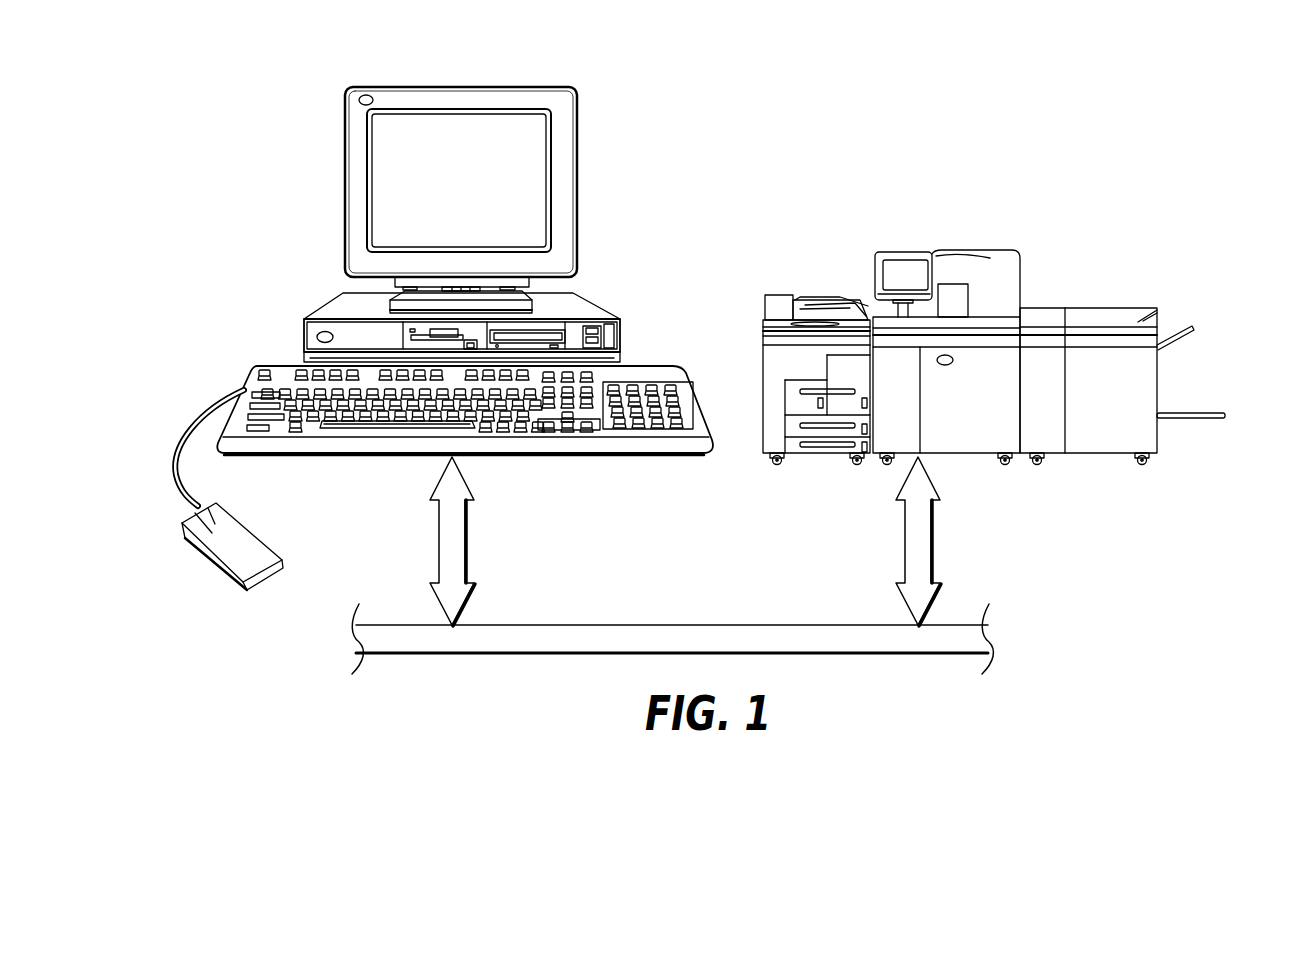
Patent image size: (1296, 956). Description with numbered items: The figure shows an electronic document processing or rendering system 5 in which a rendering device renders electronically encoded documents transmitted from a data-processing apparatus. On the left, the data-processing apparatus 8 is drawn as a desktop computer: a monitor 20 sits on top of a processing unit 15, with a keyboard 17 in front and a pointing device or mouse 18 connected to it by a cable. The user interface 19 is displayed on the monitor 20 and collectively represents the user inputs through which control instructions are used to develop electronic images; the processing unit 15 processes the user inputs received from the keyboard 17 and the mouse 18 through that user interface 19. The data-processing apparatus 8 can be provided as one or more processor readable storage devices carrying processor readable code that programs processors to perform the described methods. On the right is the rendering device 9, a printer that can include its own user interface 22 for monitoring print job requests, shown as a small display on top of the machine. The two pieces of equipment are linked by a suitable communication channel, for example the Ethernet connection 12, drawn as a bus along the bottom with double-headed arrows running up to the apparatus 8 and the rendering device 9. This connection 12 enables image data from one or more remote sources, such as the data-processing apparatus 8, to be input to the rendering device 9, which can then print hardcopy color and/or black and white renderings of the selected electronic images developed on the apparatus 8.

The electronic document processing or rendering system 5 is at (954, 126).
The data-processing apparatus 8 is at (603, 192).
The rendering device 9 is at (1041, 264).
The Ethernet connection 12 is at (678, 625).
The processing unit 15 is at (300, 332).
The keyboard 17 is at (690, 387).
The pointing device or mouse 18 is at (253, 530).
The user interface 19 is at (380, 168).
The monitor 20 is at (498, 86).
The user interface 22 is at (907, 263).